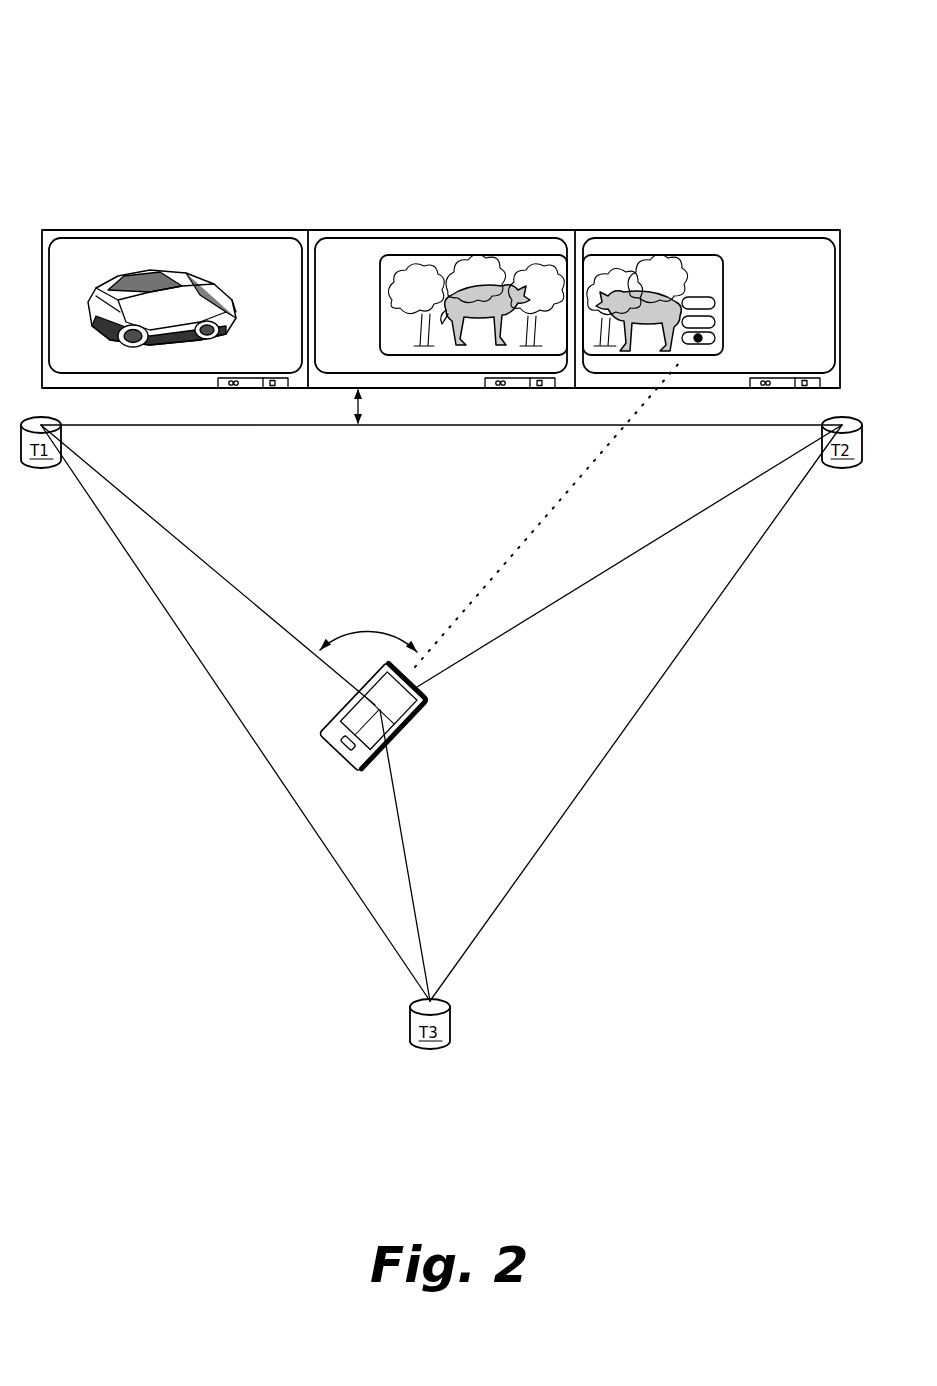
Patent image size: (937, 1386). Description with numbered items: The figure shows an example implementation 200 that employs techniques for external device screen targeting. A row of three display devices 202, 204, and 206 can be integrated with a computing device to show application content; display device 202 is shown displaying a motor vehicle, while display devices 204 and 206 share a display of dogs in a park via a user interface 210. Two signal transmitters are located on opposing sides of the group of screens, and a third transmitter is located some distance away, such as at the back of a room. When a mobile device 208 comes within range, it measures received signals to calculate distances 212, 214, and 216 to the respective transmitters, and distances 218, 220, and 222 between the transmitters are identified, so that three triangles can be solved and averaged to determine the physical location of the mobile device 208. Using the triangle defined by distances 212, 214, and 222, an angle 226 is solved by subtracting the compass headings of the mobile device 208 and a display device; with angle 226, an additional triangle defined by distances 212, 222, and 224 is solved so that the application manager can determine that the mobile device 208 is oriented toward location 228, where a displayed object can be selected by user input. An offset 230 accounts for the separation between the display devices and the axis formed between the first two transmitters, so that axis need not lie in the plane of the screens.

The example implementation 200 is at (143, 65).
The display device 202 is at (175, 230).
The display device 204 is at (448, 276).
The display device 206 is at (709, 276).
The mobile device 208 is at (398, 735).
The user interface 210 is at (475, 258).
The distance 212 is at (160, 528).
The distance 214 is at (542, 611).
The distance 216 is at (411, 890).
The distance 218 is at (257, 748).
The distance 220 is at (627, 728).
The distance 222 is at (495, 427).
The distance 224 is at (487, 583).
The angle 226 is at (362, 628).
The location 228 is at (701, 334).
The offset 230 is at (358, 410).